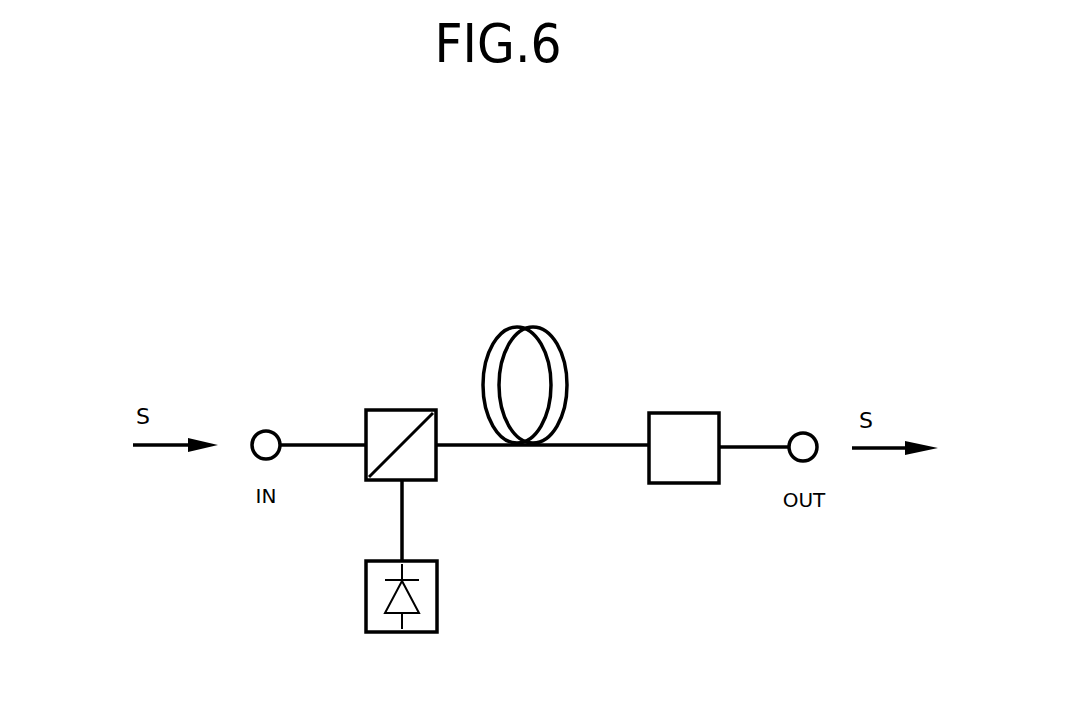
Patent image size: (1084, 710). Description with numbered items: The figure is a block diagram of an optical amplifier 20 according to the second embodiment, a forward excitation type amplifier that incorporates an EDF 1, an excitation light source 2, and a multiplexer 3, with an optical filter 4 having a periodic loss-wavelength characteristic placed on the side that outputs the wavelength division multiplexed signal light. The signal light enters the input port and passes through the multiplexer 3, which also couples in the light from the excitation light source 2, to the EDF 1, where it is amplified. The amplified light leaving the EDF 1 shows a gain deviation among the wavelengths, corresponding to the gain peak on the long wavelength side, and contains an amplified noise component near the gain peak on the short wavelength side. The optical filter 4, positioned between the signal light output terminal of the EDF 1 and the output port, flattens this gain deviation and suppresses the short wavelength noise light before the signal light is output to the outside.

The EDF 1 is at (552, 330).
The excitation light source 2 is at (438, 563).
The multiplexer 3 is at (368, 410).
The optical filter 4 is at (718, 412).
The optical amplifier 20 is at (736, 286).